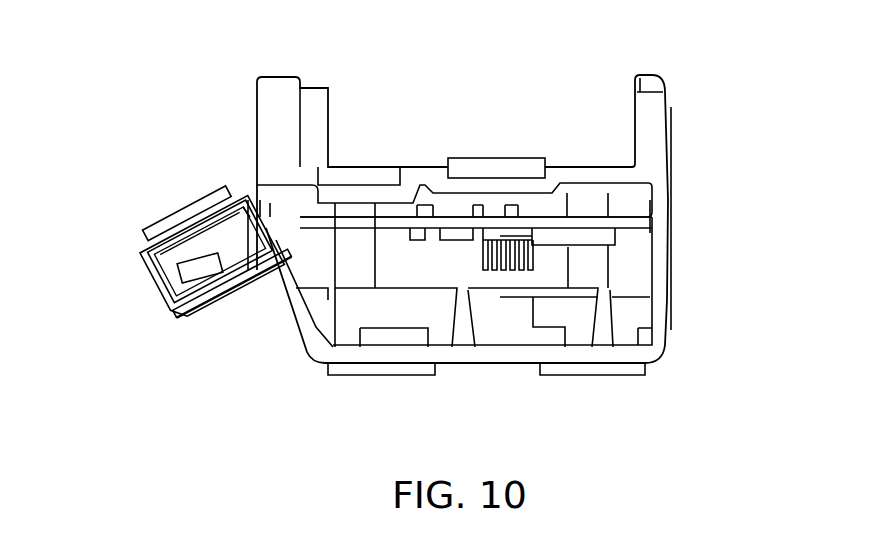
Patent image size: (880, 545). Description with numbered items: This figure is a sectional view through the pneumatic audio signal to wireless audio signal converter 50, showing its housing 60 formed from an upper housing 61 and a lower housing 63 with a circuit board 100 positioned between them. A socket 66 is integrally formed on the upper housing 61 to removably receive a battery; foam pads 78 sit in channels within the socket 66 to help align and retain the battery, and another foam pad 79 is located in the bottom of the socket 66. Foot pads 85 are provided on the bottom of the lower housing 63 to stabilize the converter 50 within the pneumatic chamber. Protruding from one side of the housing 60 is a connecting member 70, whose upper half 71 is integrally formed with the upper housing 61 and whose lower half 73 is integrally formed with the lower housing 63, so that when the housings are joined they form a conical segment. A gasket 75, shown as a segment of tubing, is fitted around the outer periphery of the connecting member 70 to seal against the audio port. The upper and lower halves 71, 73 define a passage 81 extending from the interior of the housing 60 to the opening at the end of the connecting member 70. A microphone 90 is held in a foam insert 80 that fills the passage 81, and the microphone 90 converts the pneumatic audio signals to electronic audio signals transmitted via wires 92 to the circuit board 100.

The pneumatic audio signal to wireless audio signal converter 50 is at (702, 67).
The housing 60 is at (670, 350).
The upper housing 61 is at (255, 120).
The lower housing 63 is at (305, 312).
The socket 66 is at (418, 160).
The connecting member 70 is at (166, 233).
The upper half of the connecting member 71 is at (212, 259).
The lower half of the connecting member 73 is at (234, 287).
The gasket 75 is at (199, 233).
The foam pads 78 is at (312, 87).
The foam pad 79 is at (497, 158).
The foam insert 80 is at (153, 312).
The passage 81 is at (232, 283).
The foot pads 85 is at (375, 373).
The microphone 90 is at (210, 251).
The wires 92 is at (187, 213).
The circuit board 100 is at (653, 220).